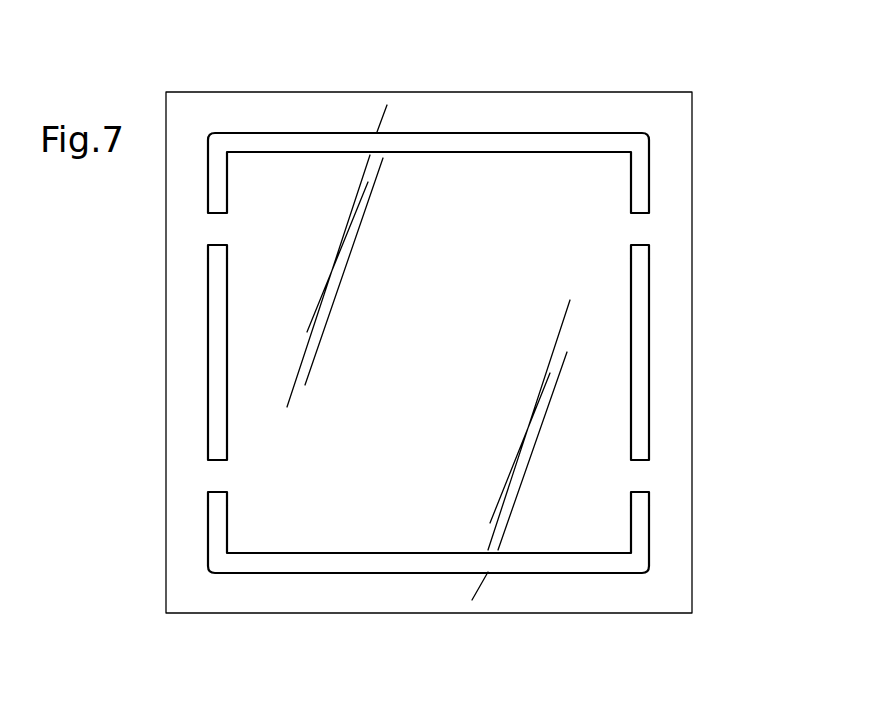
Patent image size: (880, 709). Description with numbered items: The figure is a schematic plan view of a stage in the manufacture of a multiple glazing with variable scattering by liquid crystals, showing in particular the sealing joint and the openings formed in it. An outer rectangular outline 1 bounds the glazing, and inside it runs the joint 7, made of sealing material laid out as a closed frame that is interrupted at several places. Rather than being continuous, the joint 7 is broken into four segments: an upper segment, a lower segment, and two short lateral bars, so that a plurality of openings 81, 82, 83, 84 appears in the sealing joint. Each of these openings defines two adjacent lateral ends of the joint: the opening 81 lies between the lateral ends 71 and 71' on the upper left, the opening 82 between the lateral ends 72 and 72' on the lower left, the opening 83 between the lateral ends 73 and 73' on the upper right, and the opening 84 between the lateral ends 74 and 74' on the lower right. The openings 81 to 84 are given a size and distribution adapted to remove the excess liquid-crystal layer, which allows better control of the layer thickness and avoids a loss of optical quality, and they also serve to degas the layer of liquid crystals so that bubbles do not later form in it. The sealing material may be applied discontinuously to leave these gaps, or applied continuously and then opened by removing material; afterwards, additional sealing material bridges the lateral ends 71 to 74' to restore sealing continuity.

The substrate / carrier plate 1 is at (677, 555).
The joint 7 is at (284, 142).
The lateral end of the joint 71 is at (249, 208).
The lateral end of the joint 72 is at (249, 474).
The lateral end of the joint 73 is at (608, 208).
The lateral end of the joint 74 is at (608, 473).
The lateral end of the joint 71' is at (171, 254).
The lateral end of the joint 72' is at (171, 481).
The lateral end of the joint 73' is at (688, 255).
The lateral end of the joint 74' is at (688, 482).
The opening 81 is at (222, 230).
The opening 82 is at (222, 475).
The opening 83 is at (636, 230).
The opening 84 is at (636, 480).